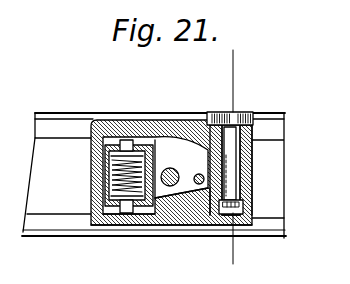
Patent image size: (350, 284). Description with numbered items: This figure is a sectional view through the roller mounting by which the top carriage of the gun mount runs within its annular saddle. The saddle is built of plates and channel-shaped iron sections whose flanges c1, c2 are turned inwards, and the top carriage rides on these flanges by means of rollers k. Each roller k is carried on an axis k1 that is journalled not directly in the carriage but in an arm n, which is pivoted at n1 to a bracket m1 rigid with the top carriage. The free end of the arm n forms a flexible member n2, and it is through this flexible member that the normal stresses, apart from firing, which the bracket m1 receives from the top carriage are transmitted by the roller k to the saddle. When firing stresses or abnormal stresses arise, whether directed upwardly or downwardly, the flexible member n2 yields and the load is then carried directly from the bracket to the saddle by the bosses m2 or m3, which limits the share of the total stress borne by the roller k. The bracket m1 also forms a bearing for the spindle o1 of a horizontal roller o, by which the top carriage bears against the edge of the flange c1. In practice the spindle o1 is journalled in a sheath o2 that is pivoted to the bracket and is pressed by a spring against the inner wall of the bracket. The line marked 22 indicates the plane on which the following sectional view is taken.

The flange c1 is at (55, 117).
The flange c2 is at (77, 234).
The bracket m1 is at (191, 126).
The boss m2 is at (112, 124).
The boss m3 is at (113, 223).
The arm n is at (159, 170).
The pivot n1 is at (212, 221).
The flexible member n2 is at (90, 186).
The roller k is at (173, 188).
The axis of the roller k1 is at (157, 209).
The horizontal roller o is at (243, 112).
The spindle o1 is at (232, 150).
The sheath o2 is at (252, 188).
The section line 22— 22 is at (245, 159).